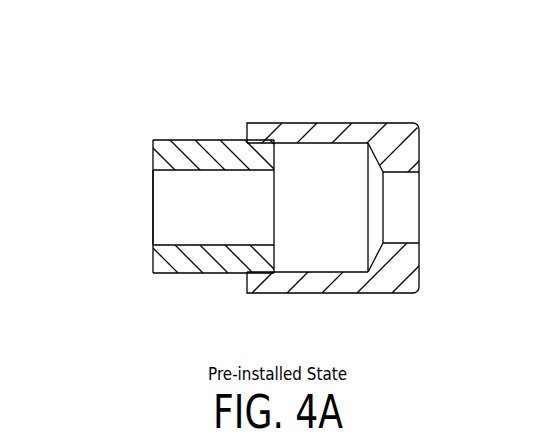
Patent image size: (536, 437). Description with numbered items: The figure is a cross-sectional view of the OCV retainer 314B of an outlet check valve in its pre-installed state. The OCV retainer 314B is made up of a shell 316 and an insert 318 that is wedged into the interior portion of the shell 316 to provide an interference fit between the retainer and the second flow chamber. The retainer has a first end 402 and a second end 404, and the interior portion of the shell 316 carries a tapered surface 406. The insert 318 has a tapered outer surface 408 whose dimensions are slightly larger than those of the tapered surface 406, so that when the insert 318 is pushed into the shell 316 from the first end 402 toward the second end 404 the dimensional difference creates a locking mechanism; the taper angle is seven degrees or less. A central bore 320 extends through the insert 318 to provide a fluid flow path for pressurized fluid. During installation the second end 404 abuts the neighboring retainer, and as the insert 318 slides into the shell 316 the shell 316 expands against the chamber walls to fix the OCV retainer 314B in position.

The OCV retainer 314B is at (124, 93).
The shell 316 is at (340, 130).
The insert 318 is at (160, 158).
The central bore 320 is at (168, 217).
The first end 402 is at (244, 130).
The second end 404 is at (420, 147).
The tapered surface 406 is at (279, 138).
The tapered outer surface 408 is at (197, 275).